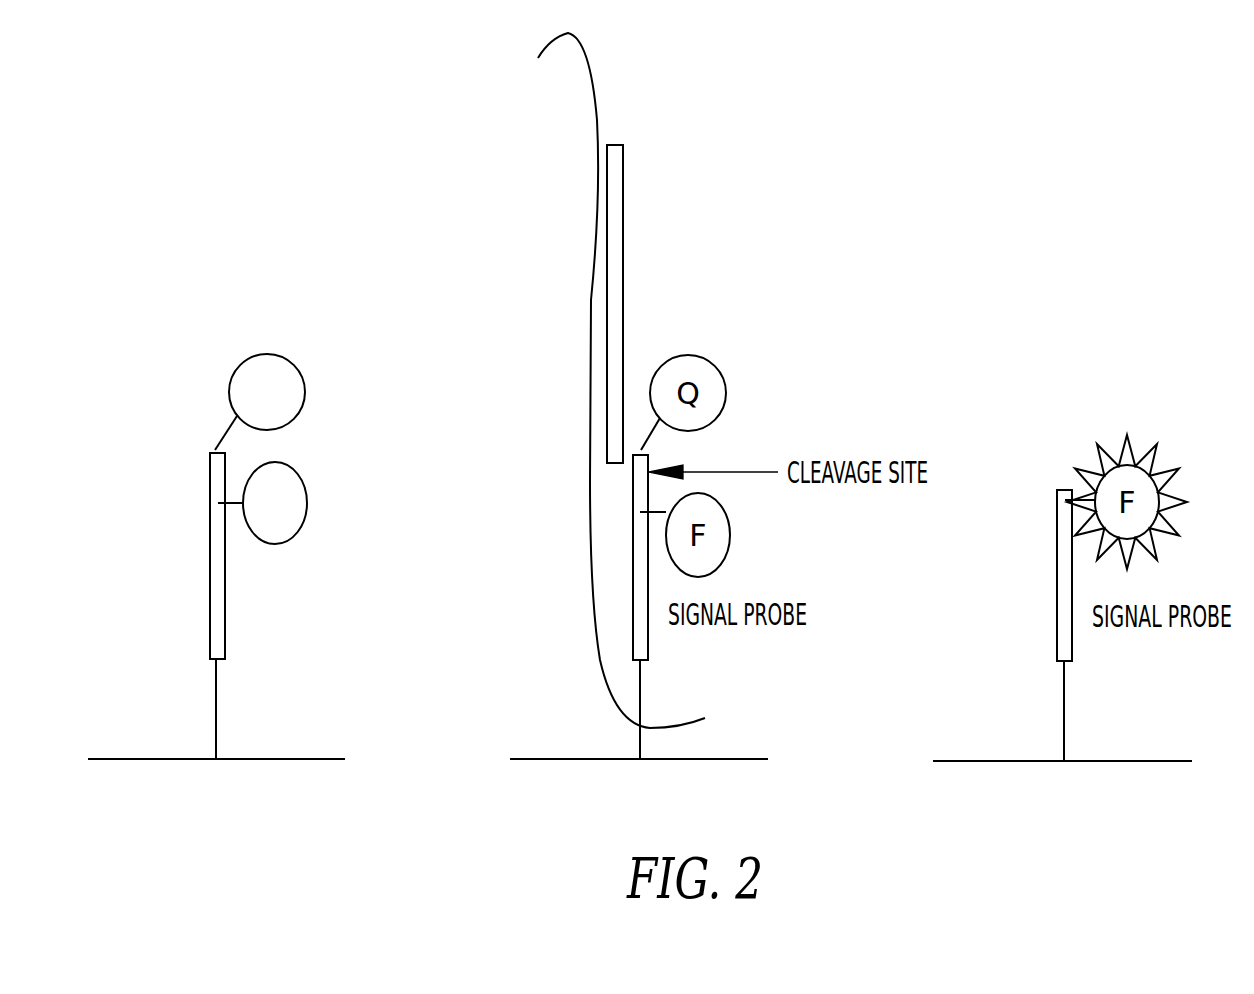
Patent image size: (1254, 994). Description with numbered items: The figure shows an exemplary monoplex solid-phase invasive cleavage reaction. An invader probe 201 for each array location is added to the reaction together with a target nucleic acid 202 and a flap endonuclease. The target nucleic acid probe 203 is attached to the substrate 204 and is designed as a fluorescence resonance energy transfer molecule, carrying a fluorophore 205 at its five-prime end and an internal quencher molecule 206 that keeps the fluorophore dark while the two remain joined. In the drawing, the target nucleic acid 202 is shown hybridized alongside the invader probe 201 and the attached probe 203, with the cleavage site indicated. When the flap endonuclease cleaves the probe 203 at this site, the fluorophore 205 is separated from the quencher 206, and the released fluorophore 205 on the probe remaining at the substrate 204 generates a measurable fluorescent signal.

The invader probe 201 is at (623, 156).
The target nucleic acid 202 is at (580, 46).
The target nucleic acid probe 203 is at (225, 647).
The substrate 204 is at (168, 760).
The fluorophore 205 is at (308, 503).
The quencher molecule 206 is at (306, 392).